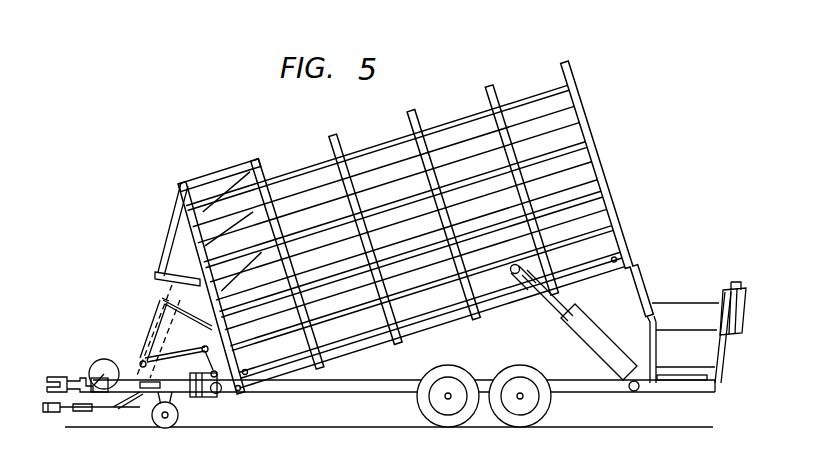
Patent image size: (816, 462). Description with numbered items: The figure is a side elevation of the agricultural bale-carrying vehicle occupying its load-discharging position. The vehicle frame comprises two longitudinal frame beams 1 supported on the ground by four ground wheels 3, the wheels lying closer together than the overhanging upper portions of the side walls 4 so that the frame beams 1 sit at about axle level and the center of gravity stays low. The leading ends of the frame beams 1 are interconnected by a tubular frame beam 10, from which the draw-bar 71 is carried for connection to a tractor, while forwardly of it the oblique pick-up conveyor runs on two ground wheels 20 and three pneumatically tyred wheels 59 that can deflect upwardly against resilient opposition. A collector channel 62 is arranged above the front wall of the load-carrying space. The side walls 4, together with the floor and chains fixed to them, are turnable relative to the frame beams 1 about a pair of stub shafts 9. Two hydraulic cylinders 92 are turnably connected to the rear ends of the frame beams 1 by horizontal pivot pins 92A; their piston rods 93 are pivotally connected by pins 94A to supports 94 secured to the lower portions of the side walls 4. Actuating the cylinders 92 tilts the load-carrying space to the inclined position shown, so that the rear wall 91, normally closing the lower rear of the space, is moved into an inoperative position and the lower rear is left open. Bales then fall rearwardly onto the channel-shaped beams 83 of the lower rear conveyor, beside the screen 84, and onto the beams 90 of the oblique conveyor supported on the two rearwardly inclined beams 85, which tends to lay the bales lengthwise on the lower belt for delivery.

The longitudinal frame beams 1 is at (300, 382).
The ground wheels 3 is at (420, 410).
The side walls 4 is at (470, 112).
The stub shafts 9 is at (241, 391).
The tubular frame beam 10 is at (224, 392).
The ground wheels 20 is at (176, 424).
The pneumatically tyred wheels 59 is at (103, 360).
The collector channel 62 is at (175, 240).
The draw-bar 71 is at (76, 379).
The channel-shaped beams 83 is at (683, 383).
The screen 84 is at (680, 302).
The beams 85 is at (726, 356).
The channel-shaped cross-section beams 90 is at (723, 290).
The rear wall 91 is at (647, 312).
The hydraulic cylinders 92 is at (608, 360).
The pivot pins 92A is at (632, 392).
The piston rods 93 is at (566, 318).
The supports 94 is at (527, 294).
The pins 94A is at (513, 266).